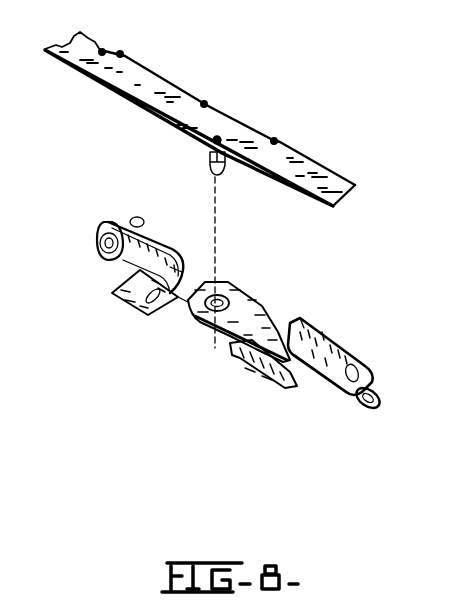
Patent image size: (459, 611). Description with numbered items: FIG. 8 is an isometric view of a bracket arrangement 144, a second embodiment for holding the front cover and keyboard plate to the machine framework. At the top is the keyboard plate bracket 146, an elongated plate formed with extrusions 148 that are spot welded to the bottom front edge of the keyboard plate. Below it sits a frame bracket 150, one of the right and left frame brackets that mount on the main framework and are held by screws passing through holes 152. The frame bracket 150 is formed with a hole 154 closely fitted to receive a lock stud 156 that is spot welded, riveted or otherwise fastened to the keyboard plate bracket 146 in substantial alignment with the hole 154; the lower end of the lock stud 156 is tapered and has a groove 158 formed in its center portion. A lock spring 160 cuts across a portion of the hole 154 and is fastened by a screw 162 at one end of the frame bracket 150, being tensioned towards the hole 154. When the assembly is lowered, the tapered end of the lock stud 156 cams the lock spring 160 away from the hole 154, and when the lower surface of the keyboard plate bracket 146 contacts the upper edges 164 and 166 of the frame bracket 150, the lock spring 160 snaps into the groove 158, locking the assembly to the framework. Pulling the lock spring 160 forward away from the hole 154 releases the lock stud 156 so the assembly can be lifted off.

The bracket arrangement 144 is at (297, 37).
The keyboard plate bracket 146 is at (175, 87).
The extrusions 148 is at (120, 51).
The frame bracket 150 is at (188, 308).
The holes 152 is at (270, 386).
The hole 154 is at (203, 328).
The lock stud 156 is at (221, 176).
The groove 158 is at (207, 158).
The lock spring 160 is at (336, 402).
The screw 162 is at (97, 247).
The upper edge 164 is at (157, 240).
The upper edge 166 is at (333, 339).